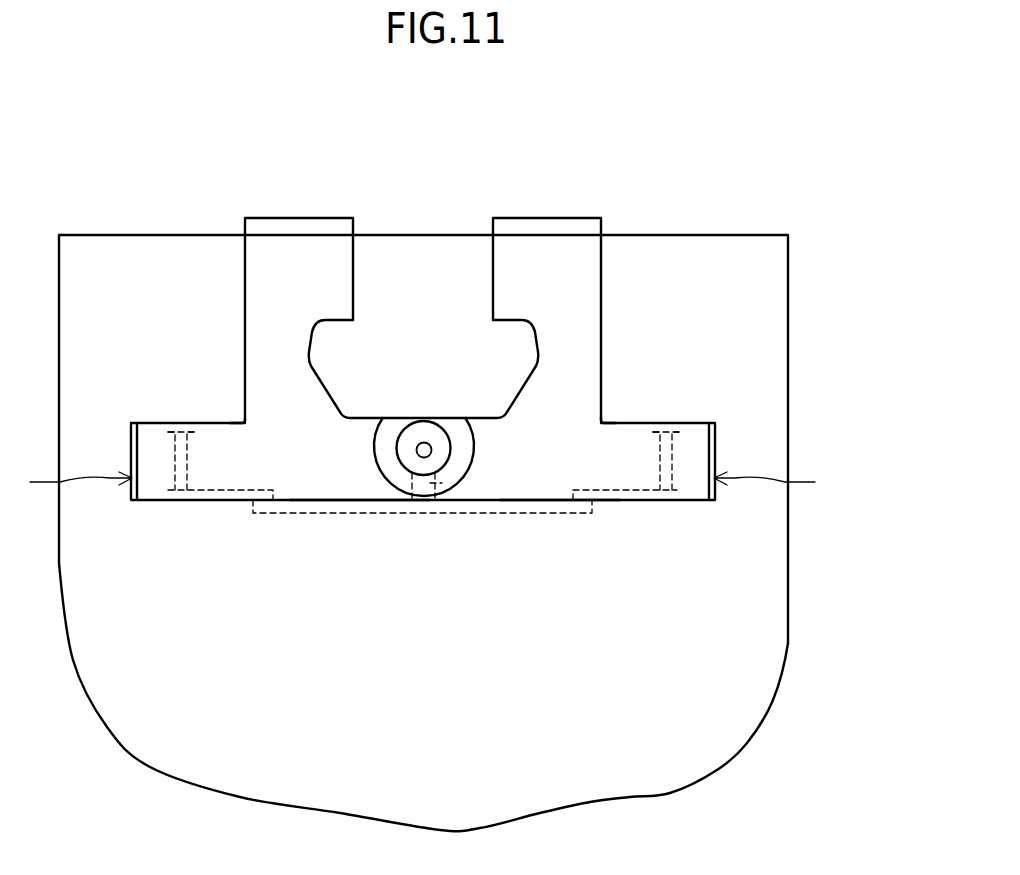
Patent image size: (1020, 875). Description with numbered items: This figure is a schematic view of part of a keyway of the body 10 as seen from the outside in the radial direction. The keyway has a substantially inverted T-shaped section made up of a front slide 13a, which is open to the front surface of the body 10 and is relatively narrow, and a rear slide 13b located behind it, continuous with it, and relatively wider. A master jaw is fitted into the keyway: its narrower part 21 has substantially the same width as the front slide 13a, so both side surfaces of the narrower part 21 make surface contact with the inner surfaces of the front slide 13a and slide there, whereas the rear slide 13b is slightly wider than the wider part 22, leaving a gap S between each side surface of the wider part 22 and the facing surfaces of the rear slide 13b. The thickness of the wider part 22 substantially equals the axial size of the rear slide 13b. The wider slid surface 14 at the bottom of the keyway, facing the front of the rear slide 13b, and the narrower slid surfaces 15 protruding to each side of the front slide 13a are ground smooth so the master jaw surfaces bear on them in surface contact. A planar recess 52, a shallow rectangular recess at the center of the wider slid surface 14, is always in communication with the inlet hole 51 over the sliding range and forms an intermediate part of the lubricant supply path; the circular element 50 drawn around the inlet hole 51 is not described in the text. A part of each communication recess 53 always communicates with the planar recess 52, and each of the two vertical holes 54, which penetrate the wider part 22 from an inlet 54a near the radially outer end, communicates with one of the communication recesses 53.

The body 10 is at (773, 322).
The narrower part 21 is at (296, 262).
The front slide 13a is at (600, 308).
The rear slide 13b is at (720, 430).
The narrower slid surface 15 is at (228, 423).
The vertical hole 54 is at (677, 447).
The inlet 54a is at (180, 420).
The communication recess 53 is at (254, 490).
The roller 50 is at (423, 437).
The inlet hole 51 is at (455, 483).
The planar recess 52 is at (473, 512).
The wider slid surface 14 is at (543, 500).
The wider part 22 is at (358, 480).
The gap S is at (422, 482).